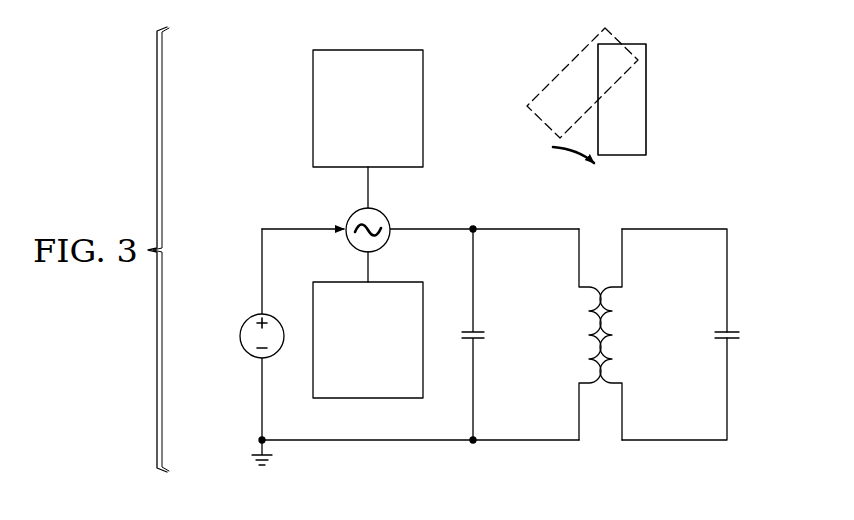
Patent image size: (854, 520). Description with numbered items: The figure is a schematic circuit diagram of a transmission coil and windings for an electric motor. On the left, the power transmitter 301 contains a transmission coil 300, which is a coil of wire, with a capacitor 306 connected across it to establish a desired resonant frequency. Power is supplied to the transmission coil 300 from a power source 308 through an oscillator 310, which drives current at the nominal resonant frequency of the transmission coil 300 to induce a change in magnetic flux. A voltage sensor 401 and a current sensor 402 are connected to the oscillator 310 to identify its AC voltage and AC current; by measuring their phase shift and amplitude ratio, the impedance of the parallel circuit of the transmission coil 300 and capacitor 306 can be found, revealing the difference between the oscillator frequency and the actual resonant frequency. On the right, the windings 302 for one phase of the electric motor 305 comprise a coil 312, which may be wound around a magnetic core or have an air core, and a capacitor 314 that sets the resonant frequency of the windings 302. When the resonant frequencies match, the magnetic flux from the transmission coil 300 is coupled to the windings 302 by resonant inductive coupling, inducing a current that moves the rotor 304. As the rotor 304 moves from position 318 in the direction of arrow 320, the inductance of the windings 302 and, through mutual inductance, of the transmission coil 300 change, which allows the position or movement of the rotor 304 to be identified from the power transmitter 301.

The transmission coil 300 is at (585, 318).
The power transmitter 301 is at (317, 460).
The windings 302 is at (721, 228).
The rotor 304 is at (647, 100).
The electric motor 305 is at (738, 53).
The capacitor 306 is at (485, 337).
The power source 308 is at (240, 338).
The oscillator 310 is at (352, 212).
The coil 312 is at (620, 350).
The capacitor 314 is at (739, 334).
The position 318 is at (568, 68).
The arrow 320 is at (565, 158).
The voltage sensor 401 is at (348, 385).
The current sensor 402 is at (348, 152).